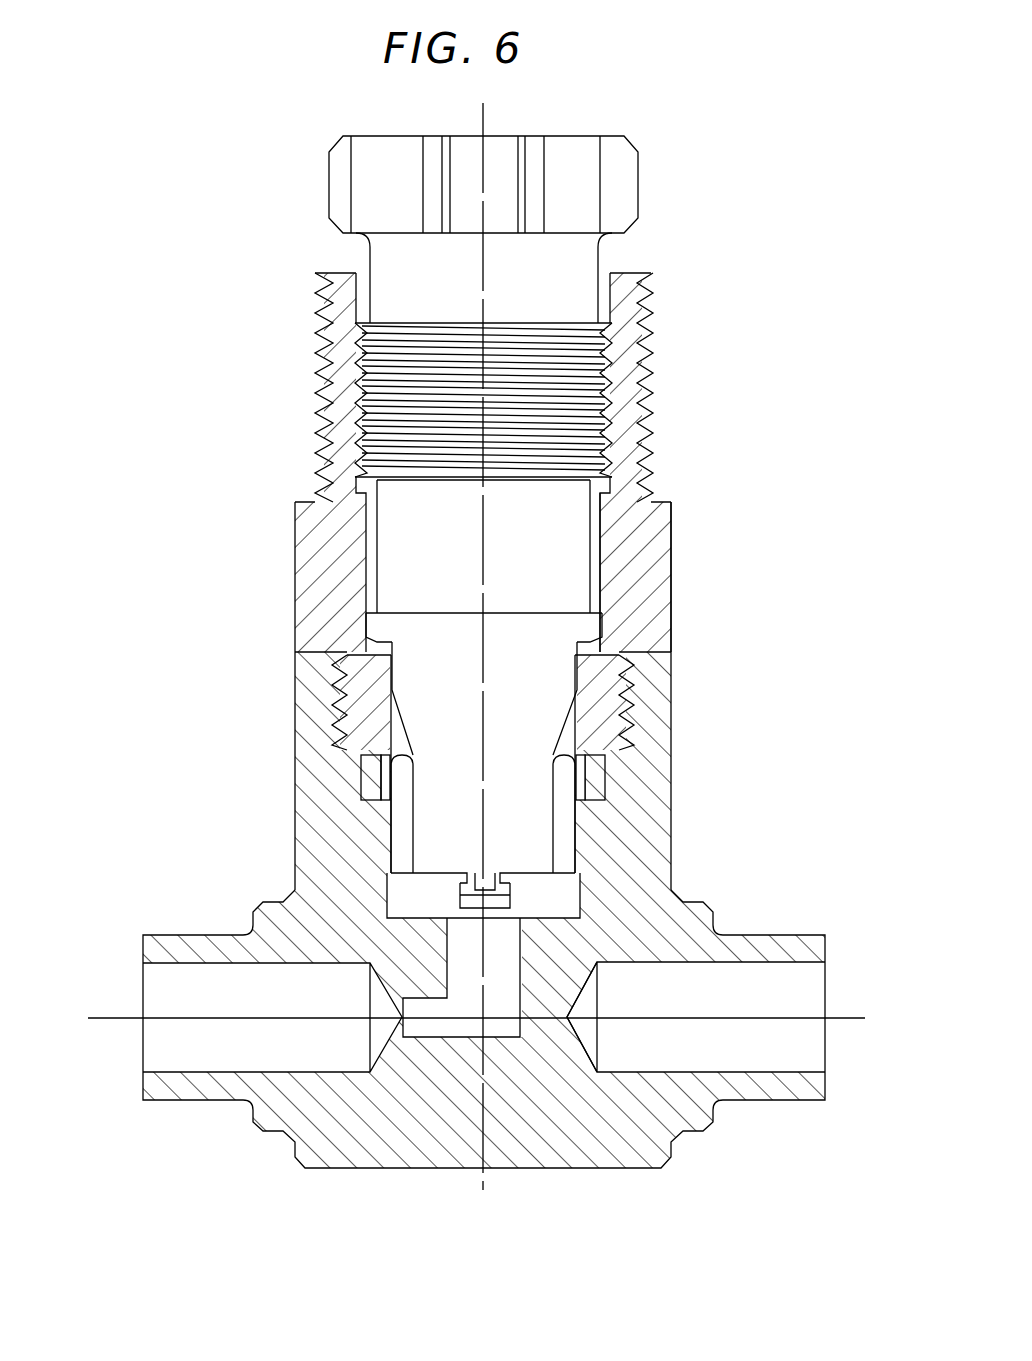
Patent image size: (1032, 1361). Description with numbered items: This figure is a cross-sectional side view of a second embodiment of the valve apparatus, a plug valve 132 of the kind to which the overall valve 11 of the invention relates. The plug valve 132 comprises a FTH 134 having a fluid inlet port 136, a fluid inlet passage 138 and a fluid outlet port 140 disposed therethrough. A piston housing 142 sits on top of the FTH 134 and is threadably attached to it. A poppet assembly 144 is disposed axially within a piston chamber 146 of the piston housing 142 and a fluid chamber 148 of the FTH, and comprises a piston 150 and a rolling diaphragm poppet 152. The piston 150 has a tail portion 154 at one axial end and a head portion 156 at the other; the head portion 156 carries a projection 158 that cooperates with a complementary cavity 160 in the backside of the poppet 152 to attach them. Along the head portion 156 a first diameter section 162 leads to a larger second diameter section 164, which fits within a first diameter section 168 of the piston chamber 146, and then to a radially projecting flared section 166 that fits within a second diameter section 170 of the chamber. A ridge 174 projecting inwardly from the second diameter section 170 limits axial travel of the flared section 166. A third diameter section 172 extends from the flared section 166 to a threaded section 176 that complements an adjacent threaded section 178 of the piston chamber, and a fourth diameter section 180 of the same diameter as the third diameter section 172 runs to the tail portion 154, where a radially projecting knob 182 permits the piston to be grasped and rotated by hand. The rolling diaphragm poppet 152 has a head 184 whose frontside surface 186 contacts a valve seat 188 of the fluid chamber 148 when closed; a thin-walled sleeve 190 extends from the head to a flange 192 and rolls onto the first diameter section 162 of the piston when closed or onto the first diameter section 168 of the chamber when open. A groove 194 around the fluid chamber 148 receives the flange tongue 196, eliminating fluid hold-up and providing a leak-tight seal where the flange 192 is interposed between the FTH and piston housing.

The valve 11 is at (600, 598).
The plug valve 132 is at (708, 495).
The FTH 134 is at (588, 1118).
The fluid inlet port 136 is at (200, 995).
The fluid inlet passage 138 is at (461, 977).
The fluid outlet port 140 is at (790, 985).
The piston housing 142 is at (647, 556).
The poppet assembly 144 is at (600, 500).
The piston chamber 146 is at (372, 518).
The fluid chamber 148 is at (385, 835).
The piston 150 is at (568, 580).
The rolling diaphragm poppet 152 is at (545, 898).
The tail portion 154 is at (570, 128).
The head portion 156 is at (550, 862).
The projection 158 is at (395, 905).
The cavity 160 is at (488, 878).
The first diameter section 162 is at (335, 732).
The second diameter section 164 is at (580, 682).
The flared section 166 is at (383, 620).
The first diameter section 168 is at (335, 678).
The second diameter section 170 is at (366, 580).
The third diameter section 172 is at (657, 538).
The ridge 174 is at (590, 488).
The threaded section 176 is at (605, 362).
The threaded section 178 is at (407, 322).
The fourth diameter section 180 is at (600, 262).
The knob 182 is at (627, 183).
The head 184 is at (548, 900).
The frontside surface 186 is at (572, 990).
The valve seat 188 is at (523, 920).
The sleeve 190 is at (415, 820).
The flange 192 is at (605, 775).
The groove 194 is at (605, 790).
The tongue 196 is at (378, 800).